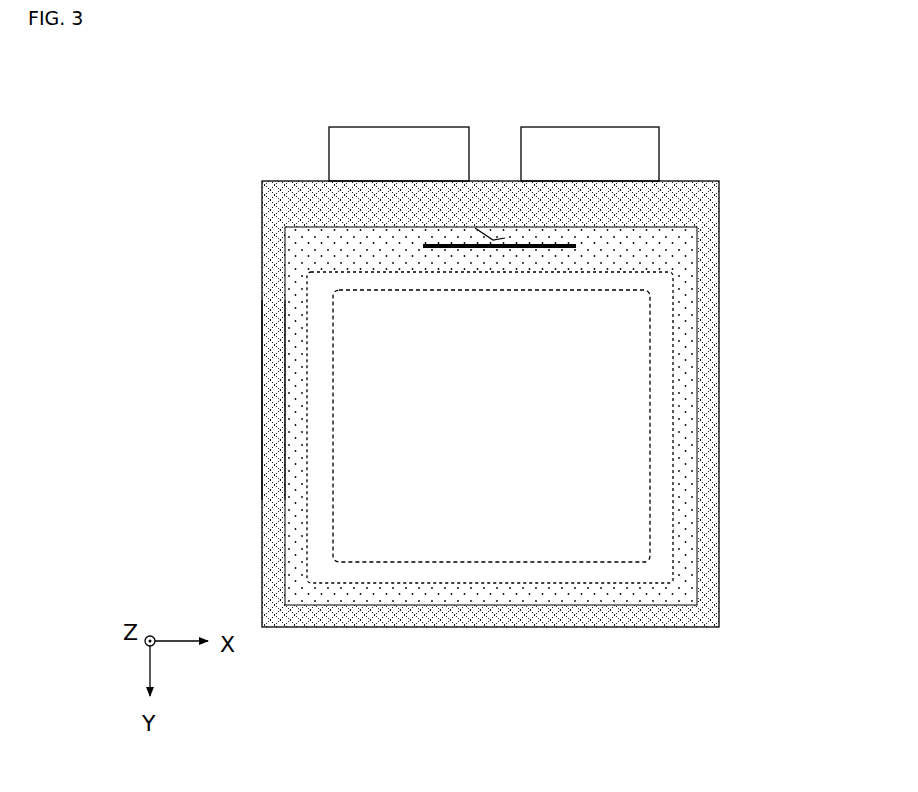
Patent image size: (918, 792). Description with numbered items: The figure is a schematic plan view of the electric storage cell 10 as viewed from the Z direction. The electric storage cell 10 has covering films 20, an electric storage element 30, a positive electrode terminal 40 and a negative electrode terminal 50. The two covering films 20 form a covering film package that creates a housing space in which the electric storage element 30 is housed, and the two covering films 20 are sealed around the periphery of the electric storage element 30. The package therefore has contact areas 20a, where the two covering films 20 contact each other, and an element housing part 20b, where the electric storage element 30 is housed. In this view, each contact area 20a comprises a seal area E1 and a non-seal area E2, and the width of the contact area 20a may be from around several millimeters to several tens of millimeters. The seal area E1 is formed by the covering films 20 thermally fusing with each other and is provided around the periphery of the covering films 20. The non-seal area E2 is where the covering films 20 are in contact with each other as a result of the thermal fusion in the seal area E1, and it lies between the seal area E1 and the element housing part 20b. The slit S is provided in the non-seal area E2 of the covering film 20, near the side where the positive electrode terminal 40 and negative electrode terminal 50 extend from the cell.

The electric storage cell 10 is at (760, 144).
The covering films 20 is at (718, 547).
The contact areas 20a is at (187, 400).
The element housing part 20b is at (662, 309).
The electric storage element 30 is at (630, 408).
The positive electrode terminal 40 is at (590, 147).
The negative electrode terminal 50 is at (402, 145).
The slit S is at (546, 246).
The seal area E1 is at (274, 378).
The non-seal area E2 is at (294, 428).